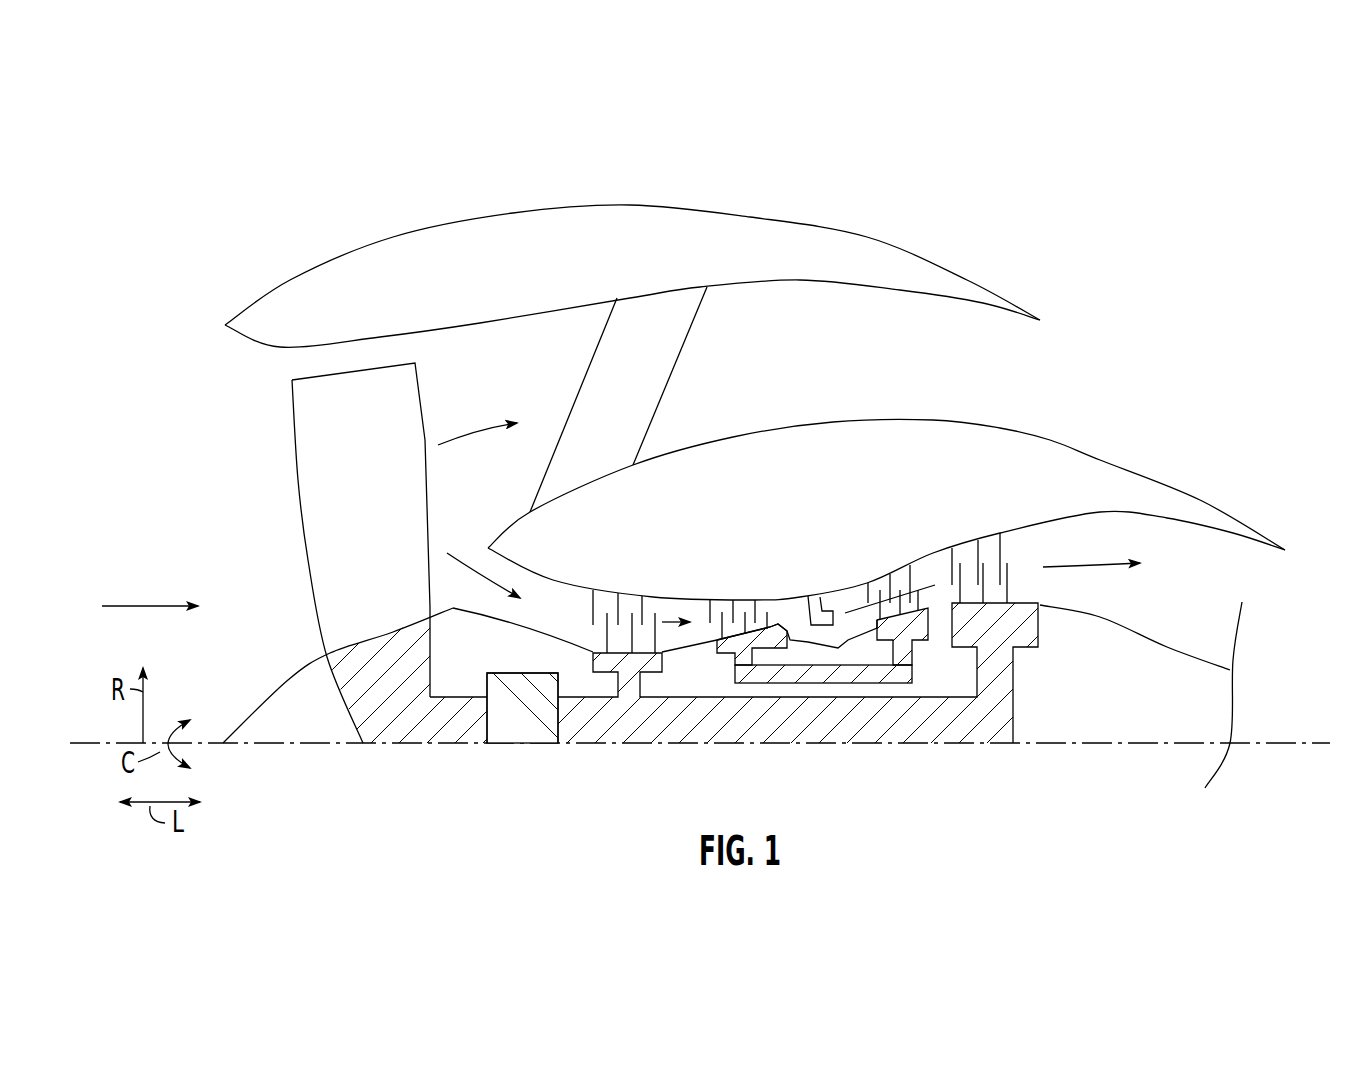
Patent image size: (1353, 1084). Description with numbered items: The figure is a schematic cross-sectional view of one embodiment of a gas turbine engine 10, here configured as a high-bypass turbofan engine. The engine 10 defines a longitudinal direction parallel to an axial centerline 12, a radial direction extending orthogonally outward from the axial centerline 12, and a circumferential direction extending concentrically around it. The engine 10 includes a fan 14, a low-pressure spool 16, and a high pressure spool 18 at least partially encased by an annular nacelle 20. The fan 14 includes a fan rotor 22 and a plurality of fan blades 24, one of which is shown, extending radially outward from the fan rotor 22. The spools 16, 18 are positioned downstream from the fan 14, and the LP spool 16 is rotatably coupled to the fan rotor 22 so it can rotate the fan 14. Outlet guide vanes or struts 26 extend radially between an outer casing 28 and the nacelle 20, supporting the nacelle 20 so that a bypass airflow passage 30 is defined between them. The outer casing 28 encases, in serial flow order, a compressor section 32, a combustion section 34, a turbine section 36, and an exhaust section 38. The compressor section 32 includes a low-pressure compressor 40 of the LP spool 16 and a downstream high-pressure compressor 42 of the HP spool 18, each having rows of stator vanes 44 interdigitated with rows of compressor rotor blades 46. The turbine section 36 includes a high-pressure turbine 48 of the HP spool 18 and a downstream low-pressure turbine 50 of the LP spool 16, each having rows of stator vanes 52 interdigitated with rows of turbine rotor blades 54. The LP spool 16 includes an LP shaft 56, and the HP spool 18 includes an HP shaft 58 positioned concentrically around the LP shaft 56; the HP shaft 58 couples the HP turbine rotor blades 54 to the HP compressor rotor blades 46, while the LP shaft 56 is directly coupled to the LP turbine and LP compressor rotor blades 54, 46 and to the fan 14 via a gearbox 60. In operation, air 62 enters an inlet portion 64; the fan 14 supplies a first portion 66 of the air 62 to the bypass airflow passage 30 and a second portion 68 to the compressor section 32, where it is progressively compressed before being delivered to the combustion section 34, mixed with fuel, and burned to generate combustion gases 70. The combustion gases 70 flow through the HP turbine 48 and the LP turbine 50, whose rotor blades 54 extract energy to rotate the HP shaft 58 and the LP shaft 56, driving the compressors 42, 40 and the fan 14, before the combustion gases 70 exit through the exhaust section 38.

The gas turbine engine 10 is at (258, 165).
The axial centerline 12 is at (1117, 747).
The fan 14 is at (268, 452).
The low-pressure (LP) spool 16 is at (720, 689).
The high pressure (HP) spool 18 is at (897, 702).
The annular nacelle 20 is at (340, 252).
The fan rotor 22 is at (290, 680).
The fan blades 24 is at (300, 550).
The outlet guide vanes or struts 26 is at (588, 365).
The outer casing 28 is at (957, 422).
The bypass airflow passage 30 is at (759, 370).
The compressor section 32 is at (688, 565).
The combustion section 34 is at (808, 565).
The turbine section 36 is at (917, 533).
The exhaust section 38 is at (1219, 583).
The low-pressure (LP) compressor 40 is at (603, 563).
The high-pressure (HP) compressor 42 is at (735, 566).
The stator vanes 44 is at (590, 605).
The compressor rotor blades 46 is at (668, 612).
The high-pressure (HP) turbine 48 is at (880, 558).
The low-pressure (LP) turbine 50 is at (998, 508).
The stator vanes 52 is at (867, 598).
The turbine rotor blades 54 is at (928, 606).
The low-pressure (LP) shaft 56 is at (700, 728).
The high pressure (HP) shaft 58 is at (877, 683).
The gearbox 60 is at (530, 728).
The air 62 is at (127, 608).
The inlet portion 64 is at (222, 360).
The first portion of the air 66 is at (487, 425).
The second portion of the air 68 is at (463, 558).
The combustion gases 70 is at (937, 588).